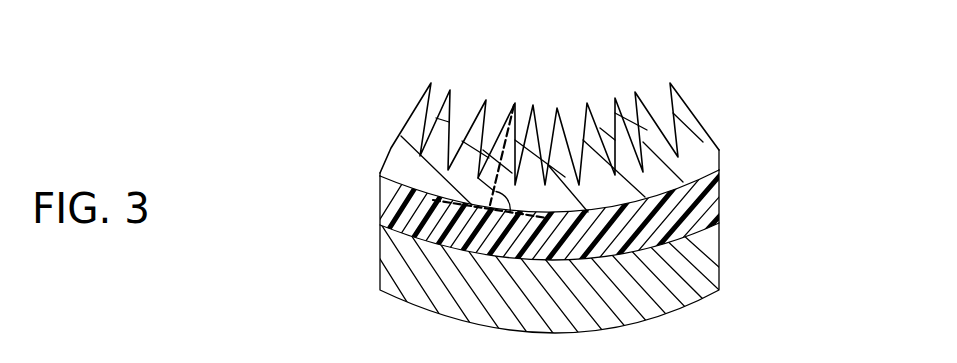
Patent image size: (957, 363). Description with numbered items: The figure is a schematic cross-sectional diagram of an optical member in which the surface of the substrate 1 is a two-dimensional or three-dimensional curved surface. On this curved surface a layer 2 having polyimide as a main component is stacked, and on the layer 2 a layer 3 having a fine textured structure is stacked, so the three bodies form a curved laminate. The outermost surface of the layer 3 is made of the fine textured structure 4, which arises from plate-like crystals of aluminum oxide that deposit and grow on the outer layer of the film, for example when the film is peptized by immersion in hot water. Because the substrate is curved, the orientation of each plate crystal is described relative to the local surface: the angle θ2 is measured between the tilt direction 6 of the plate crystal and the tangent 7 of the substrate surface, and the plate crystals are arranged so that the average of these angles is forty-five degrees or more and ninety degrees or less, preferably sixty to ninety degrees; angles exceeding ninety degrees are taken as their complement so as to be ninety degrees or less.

The substrate 1 is at (718, 250).
The layer having polyimide 2 is at (718, 192).
The layer having a fine textured structure 3 is at (717, 148).
The fine textured structure 4 is at (615, 98).
The tilt direction of the plate crystal 6 is at (507, 131).
The tangent of the substrate surface 7 is at (436, 203).